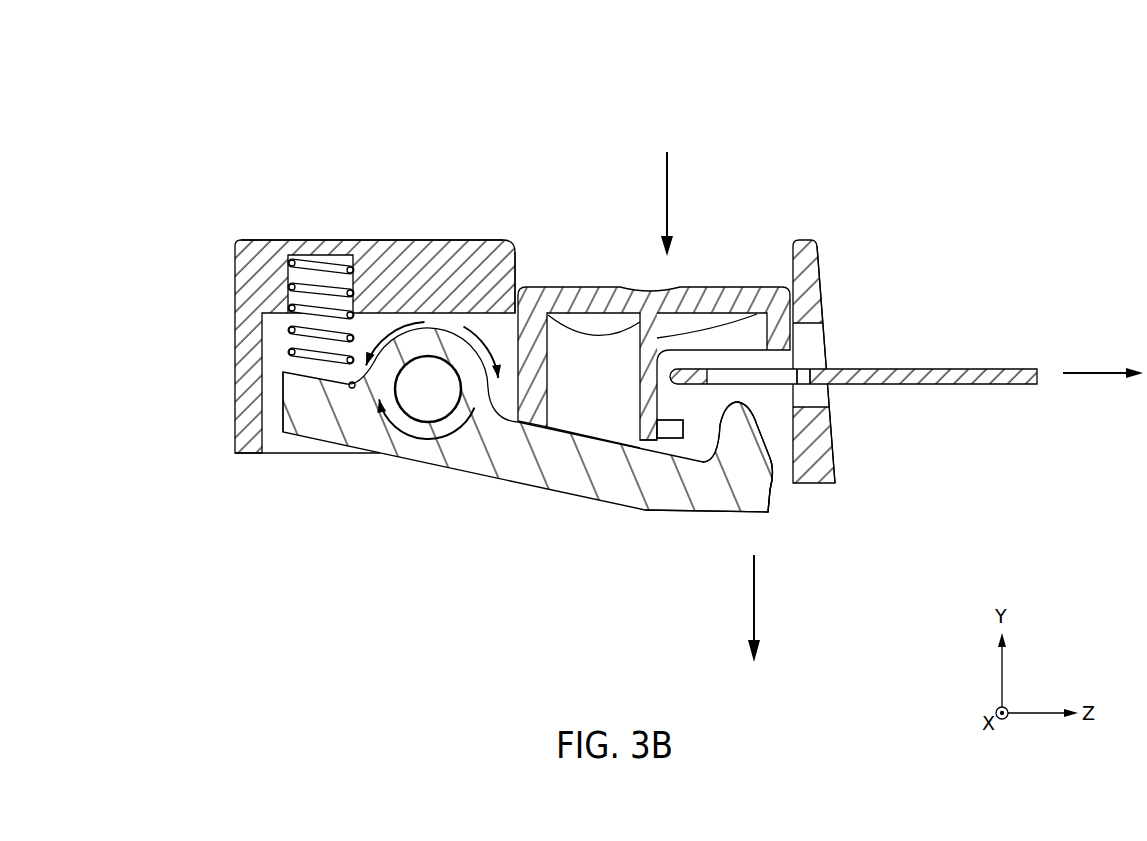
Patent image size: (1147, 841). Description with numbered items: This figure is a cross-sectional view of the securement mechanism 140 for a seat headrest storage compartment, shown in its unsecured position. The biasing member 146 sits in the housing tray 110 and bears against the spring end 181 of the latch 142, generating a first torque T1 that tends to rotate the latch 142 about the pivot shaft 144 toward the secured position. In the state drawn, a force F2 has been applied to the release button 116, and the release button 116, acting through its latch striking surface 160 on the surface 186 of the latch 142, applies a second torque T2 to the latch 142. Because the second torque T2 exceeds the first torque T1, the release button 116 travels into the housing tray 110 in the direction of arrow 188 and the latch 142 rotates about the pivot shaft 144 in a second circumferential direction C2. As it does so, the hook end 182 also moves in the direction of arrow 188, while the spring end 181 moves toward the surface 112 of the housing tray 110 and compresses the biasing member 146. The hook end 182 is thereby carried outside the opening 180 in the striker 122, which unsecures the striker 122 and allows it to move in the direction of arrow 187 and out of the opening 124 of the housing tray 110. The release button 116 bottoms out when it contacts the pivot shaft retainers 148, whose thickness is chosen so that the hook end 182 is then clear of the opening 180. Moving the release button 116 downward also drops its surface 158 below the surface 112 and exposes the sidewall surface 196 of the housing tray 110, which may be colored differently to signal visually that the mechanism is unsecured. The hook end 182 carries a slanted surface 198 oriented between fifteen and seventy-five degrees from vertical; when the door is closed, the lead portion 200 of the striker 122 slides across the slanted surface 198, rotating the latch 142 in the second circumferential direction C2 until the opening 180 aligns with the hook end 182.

The securement mechanism 140 is at (407, 120).
The housing tray 110 is at (447, 285).
The surface of housing tray 112 is at (470, 241).
The sidewall surface 196 is at (516, 254).
The biasing member 146 is at (291, 359).
The latch 142 is at (544, 457).
The spring end 181 is at (340, 420).
The pivot shaft 144 is at (444, 398).
The surface of release button 158 is at (572, 287).
The surface of latch 186 is at (597, 437).
The latch striking surface 160 is at (641, 450).
The lead portion 200 is at (695, 379).
The pivot shaft retainer 148 is at (673, 433).
The slanted surface 198 is at (773, 435).
The hook end 182 is at (753, 470).
The release button 116 is at (755, 272).
The opening of housing tray 124 is at (842, 397).
The striker 122 is at (945, 369).
The opening of striker 180 is at (803, 355).
The arrow 187 is at (1075, 377).
The arrow 188 is at (756, 580).
The force F2 is at (671, 188).
The first torque T1 is at (395, 338).
The second torque T2 is at (468, 344).
The second circumferential direction C2 is at (432, 413).